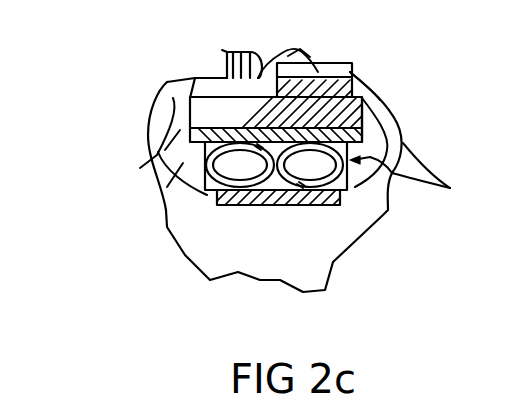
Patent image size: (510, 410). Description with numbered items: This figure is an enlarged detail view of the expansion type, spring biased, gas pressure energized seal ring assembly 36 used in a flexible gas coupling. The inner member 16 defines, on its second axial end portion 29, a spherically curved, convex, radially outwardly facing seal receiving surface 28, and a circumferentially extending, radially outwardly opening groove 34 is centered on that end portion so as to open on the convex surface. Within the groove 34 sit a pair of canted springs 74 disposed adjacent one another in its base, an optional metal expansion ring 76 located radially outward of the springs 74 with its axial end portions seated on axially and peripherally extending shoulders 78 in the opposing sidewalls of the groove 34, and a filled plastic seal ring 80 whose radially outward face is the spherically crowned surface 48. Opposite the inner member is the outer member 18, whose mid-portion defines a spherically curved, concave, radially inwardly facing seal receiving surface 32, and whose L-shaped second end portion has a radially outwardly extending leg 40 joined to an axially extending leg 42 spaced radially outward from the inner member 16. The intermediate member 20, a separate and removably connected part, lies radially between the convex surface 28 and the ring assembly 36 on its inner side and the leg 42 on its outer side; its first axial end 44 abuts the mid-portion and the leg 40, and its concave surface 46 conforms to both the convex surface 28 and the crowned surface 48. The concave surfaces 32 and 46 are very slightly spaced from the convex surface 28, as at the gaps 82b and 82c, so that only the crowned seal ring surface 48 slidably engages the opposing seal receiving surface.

The inner member 16 is at (366, 122).
The outer member 18 is at (167, 82).
The intermediate member 20 is at (352, 80).
The seal receiving surface 28 is at (368, 97).
The second axial end portion 29 is at (167, 187).
The seal receiving surface 32 is at (190, 118).
The groove 34 is at (340, 63).
The seal ring assembly 36 is at (450, 188).
The radially outwardly extending leg 40 is at (226, 78).
The axially extending leg 42 is at (305, 75).
The first axial end 44 is at (257, 52).
The concave surface 46 is at (318, 165).
The spherically crowned surface 48 is at (238, 97).
The canted springs 74 is at (313, 190).
The metal expansion ring 76 is at (289, 50).
The shoulders 78 is at (165, 150).
The filled plastic seal ring 80 is at (222, 50).
The gap 82b is at (190, 100).
The gap 82c is at (377, 112).